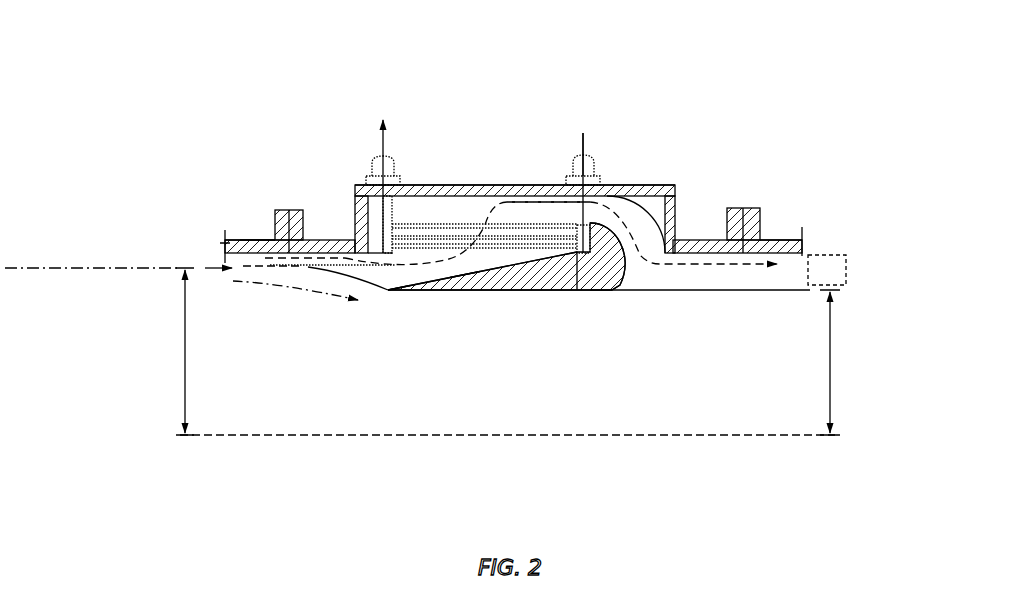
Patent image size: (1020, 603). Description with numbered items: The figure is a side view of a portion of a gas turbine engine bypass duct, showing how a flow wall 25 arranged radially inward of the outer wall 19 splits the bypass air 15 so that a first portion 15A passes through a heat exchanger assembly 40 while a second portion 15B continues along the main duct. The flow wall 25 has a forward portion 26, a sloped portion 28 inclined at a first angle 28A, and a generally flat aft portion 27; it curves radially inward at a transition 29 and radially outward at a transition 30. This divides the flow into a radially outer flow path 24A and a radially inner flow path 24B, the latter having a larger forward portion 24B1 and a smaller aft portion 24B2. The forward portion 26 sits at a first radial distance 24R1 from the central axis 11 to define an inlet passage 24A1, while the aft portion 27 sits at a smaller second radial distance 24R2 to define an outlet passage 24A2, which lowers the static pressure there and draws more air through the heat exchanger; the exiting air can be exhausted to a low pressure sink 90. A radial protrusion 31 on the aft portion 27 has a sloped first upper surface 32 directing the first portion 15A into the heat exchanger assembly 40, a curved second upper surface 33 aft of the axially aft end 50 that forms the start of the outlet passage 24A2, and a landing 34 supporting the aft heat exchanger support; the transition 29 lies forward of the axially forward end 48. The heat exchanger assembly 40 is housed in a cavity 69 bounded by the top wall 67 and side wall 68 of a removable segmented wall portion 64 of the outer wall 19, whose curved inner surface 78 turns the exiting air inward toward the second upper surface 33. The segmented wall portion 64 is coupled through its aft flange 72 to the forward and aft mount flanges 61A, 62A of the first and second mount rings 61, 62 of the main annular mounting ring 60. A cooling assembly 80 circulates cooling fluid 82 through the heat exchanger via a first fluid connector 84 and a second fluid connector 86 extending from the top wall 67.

The central axis 11 is at (253, 437).
The bypass air 15 is at (63, 268).
The first portion of the bypass air 15A is at (470, 266).
The second portion of the bypass air 15B is at (270, 283).
The outer wall 19 is at (730, 182).
The radially outer flow path 24A is at (401, 226).
The inlet passage 24A1 is at (283, 240).
The outlet passage 24A2 is at (705, 292).
The radially inner flow path 24B is at (510, 421).
The forward portion of the main bypass flow path 24B1 is at (205, 329).
The aft portion of the main bypass flow path 24B2 is at (746, 331).
The first radial distance 24R1 is at (185, 350).
The second radial distance 24R2 is at (835, 352).
The flow wall 25 is at (453, 297).
The forward portion of the flow wall 26 is at (295, 257).
The aft portion of the flow wall 27 is at (477, 297).
The sloped portion 28 is at (335, 278).
The first angle 28A is at (413, 285).
The transition 29 is at (305, 270).
The transition 30 is at (384, 294).
The radial protrusion 31 is at (579, 258).
The first upper surface 32 is at (532, 272).
The second upper surface 33 is at (612, 291).
The landing 34 is at (588, 286).
The heat exchanger assembly 40 is at (478, 217).
The axially forward end 48 is at (362, 238).
The axially aft end 50 is at (610, 234).
The main annular mounting ring 60 is at (210, 170).
The first mount ring 61 is at (225, 232).
The forward mount flange 61A is at (258, 236).
The second mount ring 62 is at (787, 236).
The aft mount flange 62A is at (758, 208).
The segmented wall portion 64 is at (538, 182).
The top wall 67 is at (521, 224).
The side wall 68 is at (664, 255).
The cavity 69 is at (507, 200).
The aft flange 72 is at (298, 208).
The curved inner surface 78 is at (652, 198).
The cooling assembly 80 is at (577, 130).
The cooling fluid 82 is at (583, 150).
The first fluid connector 84 is at (599, 173).
The second fluid connector 86 is at (365, 160).
The low pressure sink 90 is at (836, 254).